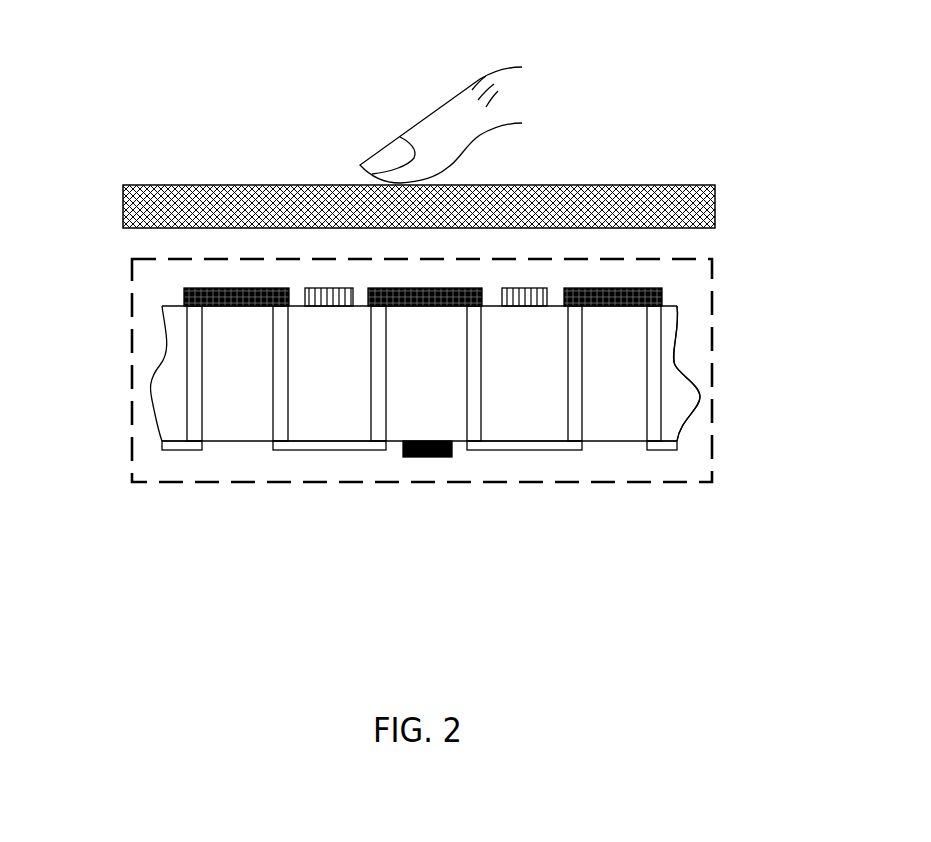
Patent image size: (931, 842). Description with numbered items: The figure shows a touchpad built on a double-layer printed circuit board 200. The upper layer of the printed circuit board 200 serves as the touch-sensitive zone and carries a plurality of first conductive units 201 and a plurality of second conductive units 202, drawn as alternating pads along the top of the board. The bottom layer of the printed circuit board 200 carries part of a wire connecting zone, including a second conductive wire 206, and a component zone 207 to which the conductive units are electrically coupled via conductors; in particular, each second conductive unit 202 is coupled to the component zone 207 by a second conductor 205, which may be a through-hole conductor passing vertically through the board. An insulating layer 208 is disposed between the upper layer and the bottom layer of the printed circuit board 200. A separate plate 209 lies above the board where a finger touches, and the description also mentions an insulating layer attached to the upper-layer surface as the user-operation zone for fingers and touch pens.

The printed circuit board 200 is at (537, 482).
The first conductive unit 201 is at (338, 306).
The second conductive unit 202 is at (432, 306).
The second conductor 205 is at (195, 343).
The second conductive wire 206 is at (327, 445).
The component zone 207 is at (435, 457).
The insulating layer 208 is at (683, 396).
The cover plate 209 is at (592, 184).